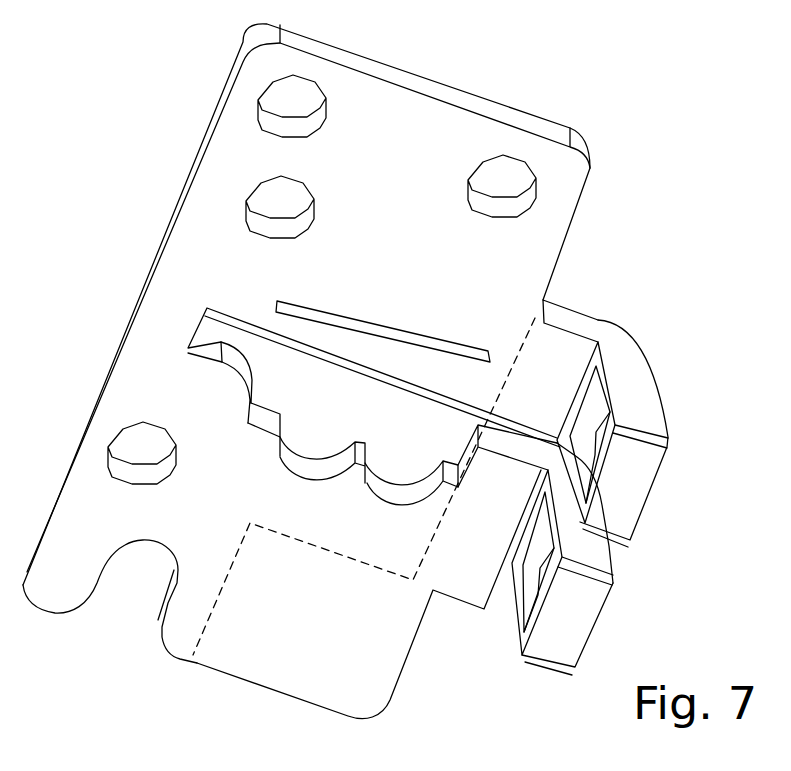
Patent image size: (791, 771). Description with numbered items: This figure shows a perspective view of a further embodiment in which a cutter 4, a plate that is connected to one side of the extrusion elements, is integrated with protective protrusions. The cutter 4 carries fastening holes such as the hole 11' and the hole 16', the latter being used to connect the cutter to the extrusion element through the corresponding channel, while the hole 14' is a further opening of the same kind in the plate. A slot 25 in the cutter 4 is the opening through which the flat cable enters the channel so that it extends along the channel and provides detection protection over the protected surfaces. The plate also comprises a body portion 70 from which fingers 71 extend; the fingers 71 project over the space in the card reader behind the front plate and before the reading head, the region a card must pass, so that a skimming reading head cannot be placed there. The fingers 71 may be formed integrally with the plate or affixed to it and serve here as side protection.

The cutter 4 is at (392, 110).
The hole 11' is at (397, 146).
The mounting hole 14' is at (206, 168).
The hole 16' is at (106, 403).
The slot 25 is at (347, 322).
The block 70 is at (382, 642).
The finger 71 is at (563, 623).